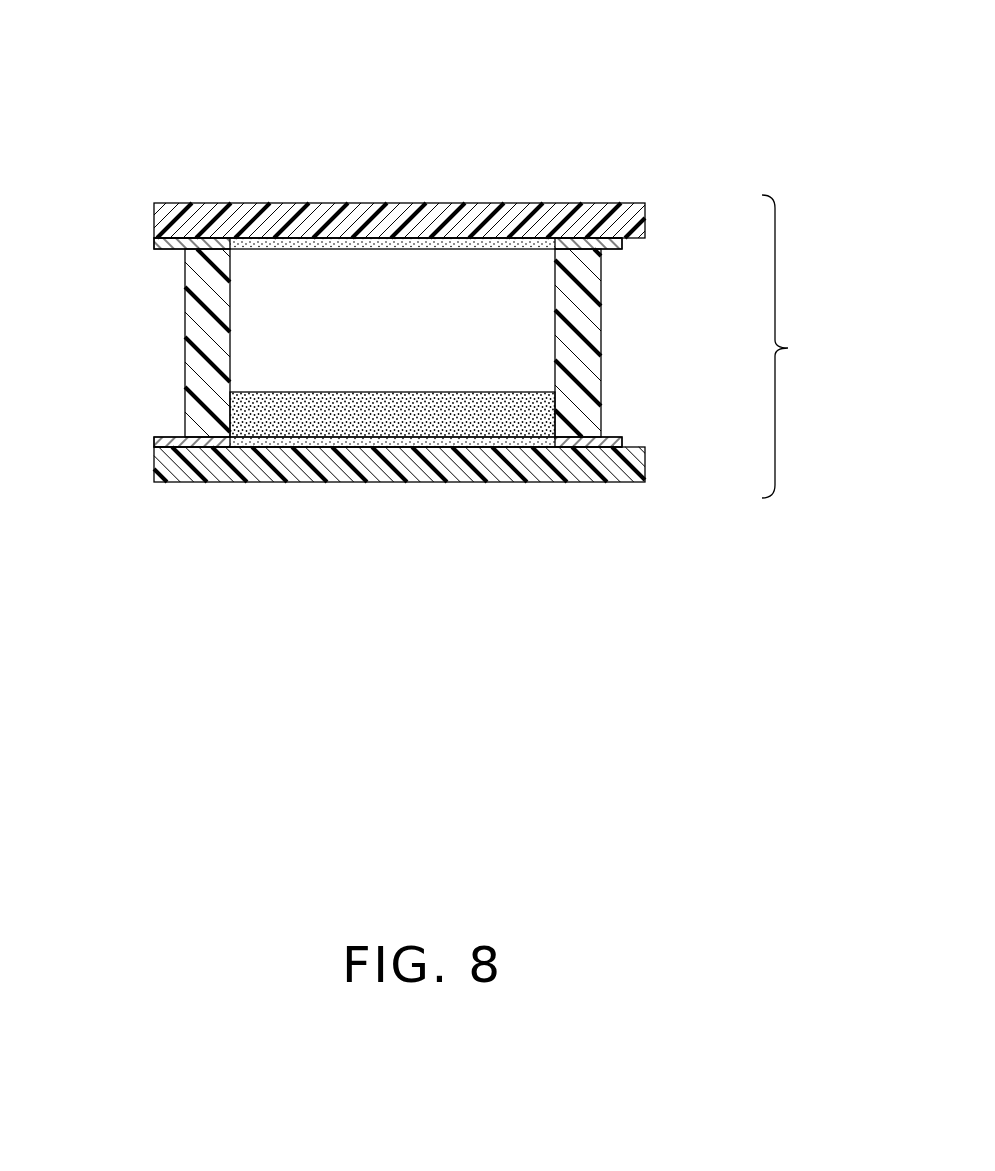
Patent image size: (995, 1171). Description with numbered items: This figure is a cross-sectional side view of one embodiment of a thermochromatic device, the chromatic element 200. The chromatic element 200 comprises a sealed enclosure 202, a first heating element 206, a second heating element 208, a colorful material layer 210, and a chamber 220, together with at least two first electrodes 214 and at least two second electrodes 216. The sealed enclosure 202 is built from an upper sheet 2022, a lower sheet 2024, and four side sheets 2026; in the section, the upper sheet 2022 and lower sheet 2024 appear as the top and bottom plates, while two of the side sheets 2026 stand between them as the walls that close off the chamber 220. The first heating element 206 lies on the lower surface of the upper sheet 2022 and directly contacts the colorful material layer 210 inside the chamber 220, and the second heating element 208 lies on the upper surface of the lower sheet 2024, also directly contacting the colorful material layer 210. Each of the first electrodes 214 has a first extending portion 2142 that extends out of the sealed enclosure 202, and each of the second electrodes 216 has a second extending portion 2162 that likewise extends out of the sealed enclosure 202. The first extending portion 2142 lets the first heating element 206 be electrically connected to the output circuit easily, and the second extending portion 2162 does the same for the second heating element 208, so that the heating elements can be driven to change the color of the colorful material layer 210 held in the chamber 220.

The chromatic element 200 is at (414, 82).
The sealed enclosure 202 is at (805, 346).
The upper sheet 2022 is at (640, 215).
The lower sheet 2024 is at (630, 452).
The side sheets 2026 is at (600, 362).
The first heating element 206 is at (425, 247).
The second heating element 208 is at (465, 447).
The colorful material layer 210 is at (295, 422).
The first electrodes 214 is at (205, 243).
The first extending portion 2142 is at (157, 242).
The second electrodes 216 is at (580, 445).
The second extending portion 2162 is at (160, 441).
The chamber 220 is at (262, 265).